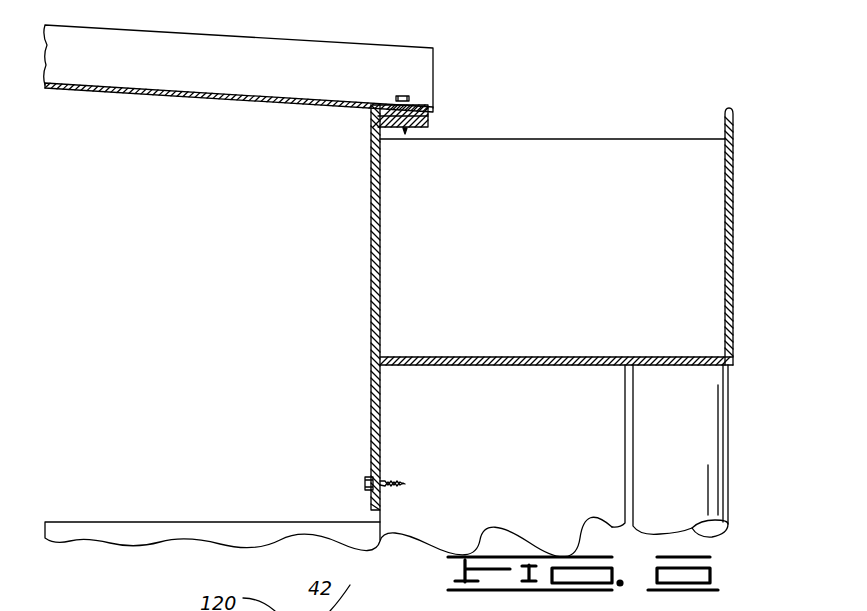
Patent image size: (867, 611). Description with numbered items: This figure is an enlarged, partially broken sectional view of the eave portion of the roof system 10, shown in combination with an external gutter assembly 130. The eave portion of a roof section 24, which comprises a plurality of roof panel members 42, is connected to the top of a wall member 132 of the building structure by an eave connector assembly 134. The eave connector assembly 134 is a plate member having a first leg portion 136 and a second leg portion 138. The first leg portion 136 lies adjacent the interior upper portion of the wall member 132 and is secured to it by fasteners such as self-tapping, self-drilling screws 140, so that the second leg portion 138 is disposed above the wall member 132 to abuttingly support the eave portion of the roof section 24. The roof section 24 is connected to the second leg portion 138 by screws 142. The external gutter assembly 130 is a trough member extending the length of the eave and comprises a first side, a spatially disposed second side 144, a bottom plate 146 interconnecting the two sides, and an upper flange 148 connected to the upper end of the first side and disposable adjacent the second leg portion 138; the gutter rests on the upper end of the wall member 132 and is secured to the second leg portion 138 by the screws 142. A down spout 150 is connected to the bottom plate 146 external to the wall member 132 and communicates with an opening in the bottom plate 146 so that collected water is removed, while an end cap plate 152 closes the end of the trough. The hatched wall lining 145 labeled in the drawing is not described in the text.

The roof system 10 is at (387, 33).
The roof section 24 is at (252, 31).
The roof panel member 42 is at (302, 58).
The external gutter assembly 130 is at (594, 236).
The wall member 132 is at (530, 460).
The eave connector assembly 134 is at (372, 322).
The first leg portion 136 is at (373, 388).
The second leg portion 138 is at (435, 128).
The self-tapping, self-drilling screws 140 is at (363, 483).
The self-tapping, self-drilling screws 142 is at (407, 97).
The second side 144 is at (728, 238).
The upper web portion 145 is at (383, 250).
The bottom plate 146 is at (532, 357).
The upper flange 148 is at (410, 125).
The down spout 150 is at (718, 452).
The end cap plate 152 is at (543, 158).